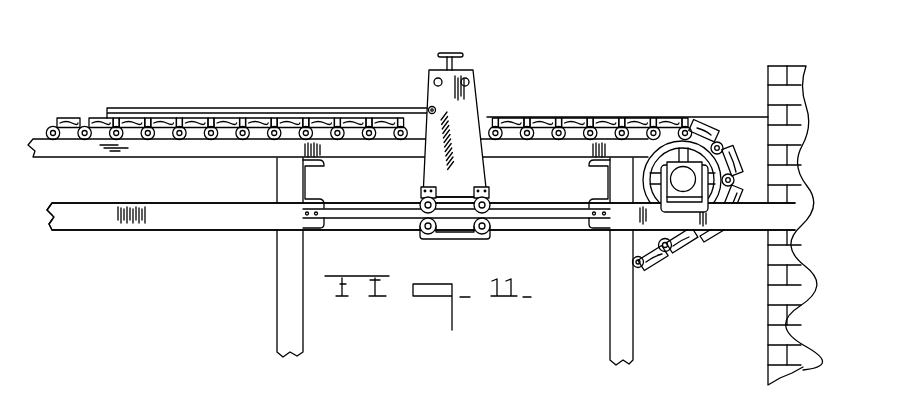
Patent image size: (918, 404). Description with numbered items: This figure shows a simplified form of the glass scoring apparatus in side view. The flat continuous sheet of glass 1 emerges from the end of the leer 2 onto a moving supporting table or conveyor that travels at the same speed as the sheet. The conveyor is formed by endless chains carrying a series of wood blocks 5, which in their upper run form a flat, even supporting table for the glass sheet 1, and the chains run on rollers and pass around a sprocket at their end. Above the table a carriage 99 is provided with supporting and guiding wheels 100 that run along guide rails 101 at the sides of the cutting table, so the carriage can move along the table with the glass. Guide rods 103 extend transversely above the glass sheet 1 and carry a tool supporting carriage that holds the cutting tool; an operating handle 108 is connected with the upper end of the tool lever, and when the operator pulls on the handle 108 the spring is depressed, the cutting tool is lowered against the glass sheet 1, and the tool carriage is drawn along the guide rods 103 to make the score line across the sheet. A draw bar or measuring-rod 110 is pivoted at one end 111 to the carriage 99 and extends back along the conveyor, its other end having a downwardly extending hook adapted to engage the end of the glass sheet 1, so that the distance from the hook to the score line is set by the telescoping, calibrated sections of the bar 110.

The glass sheet 1 is at (622, 117).
The leer 2 is at (767, 92).
The wood blocks 5 is at (665, 258).
The carriage 99 is at (462, 170).
The supporting and guiding wheels 100 is at (491, 205).
The guide rails 101 is at (520, 218).
The guide rods 103 is at (474, 76).
The operating handle 108 is at (441, 52).
The draw bar or measuring-rod 110 is at (306, 107).
The pivot 111 is at (429, 108).